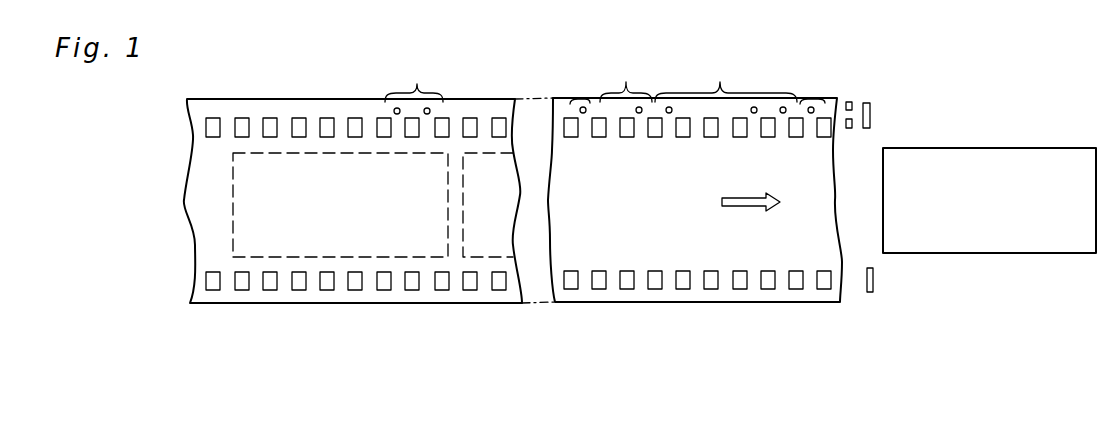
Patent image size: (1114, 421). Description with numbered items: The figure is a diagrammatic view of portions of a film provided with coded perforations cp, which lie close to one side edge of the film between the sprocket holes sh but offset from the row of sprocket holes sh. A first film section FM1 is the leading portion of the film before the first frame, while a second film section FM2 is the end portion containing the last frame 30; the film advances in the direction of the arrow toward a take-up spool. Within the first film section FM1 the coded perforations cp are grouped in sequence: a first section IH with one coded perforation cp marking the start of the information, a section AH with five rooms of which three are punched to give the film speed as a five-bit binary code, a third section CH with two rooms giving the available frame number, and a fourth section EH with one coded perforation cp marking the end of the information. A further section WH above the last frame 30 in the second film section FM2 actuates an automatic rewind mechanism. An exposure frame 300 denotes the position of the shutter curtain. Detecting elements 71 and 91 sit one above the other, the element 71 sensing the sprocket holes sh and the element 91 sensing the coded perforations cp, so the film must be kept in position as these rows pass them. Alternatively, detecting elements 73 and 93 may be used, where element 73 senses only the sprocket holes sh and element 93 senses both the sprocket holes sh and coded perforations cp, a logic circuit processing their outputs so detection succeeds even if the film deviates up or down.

The first film section FM1 is at (716, 308).
The second film section FM2 is at (378, 308).
The sprocket holes sh is at (271, 129).
The frame 30 is at (394, 263).
The coded perforations cp is at (427, 114).
The section WH is at (414, 74).
The fourth section EH is at (578, 97).
The third section CH is at (626, 73).
The section AH is at (726, 73).
The first section IH is at (806, 97).
The detecting element 91 is at (849, 100).
The detecting element 93 is at (872, 102).
The detecting element 71 is at (848, 131).
The detecting element 73 is at (870, 294).
The exposure frame 300 is at (1005, 160).